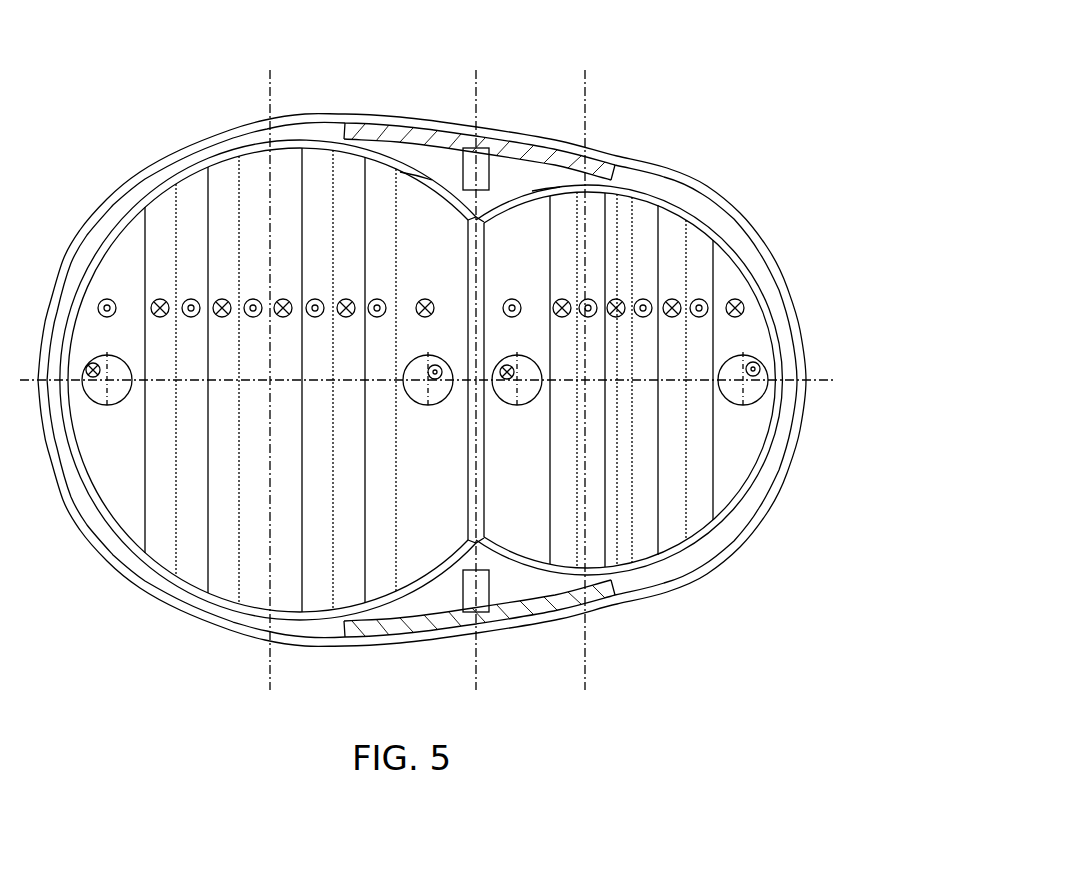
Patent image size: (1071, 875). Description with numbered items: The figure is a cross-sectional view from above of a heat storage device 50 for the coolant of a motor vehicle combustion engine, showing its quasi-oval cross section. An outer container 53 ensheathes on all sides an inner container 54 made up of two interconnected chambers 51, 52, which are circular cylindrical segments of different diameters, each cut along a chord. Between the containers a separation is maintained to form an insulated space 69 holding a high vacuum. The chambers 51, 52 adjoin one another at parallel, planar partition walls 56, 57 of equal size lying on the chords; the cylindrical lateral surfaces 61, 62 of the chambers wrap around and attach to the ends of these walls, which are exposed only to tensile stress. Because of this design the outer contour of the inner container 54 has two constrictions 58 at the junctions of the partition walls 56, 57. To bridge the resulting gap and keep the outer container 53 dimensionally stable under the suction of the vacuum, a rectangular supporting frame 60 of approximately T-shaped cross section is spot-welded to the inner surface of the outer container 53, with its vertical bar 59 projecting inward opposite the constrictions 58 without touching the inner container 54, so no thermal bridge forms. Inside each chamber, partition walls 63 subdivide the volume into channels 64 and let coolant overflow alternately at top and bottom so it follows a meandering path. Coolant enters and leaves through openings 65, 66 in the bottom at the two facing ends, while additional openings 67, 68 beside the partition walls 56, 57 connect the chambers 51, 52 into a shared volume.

The heat storage device 50 is at (770, 82).
The chamber 51 is at (717, 221).
The chamber 52 is at (128, 205).
The outer container 53 is at (181, 148).
The inner container 54 is at (432, 180).
The partition wall 56 is at (486, 468).
The partition wall 57 is at (466, 468).
The constriction 58 is at (484, 206).
The bar 59 is at (476, 380).
The supporting frame 60 is at (460, 133).
The cylindrical lateral surface 61 is at (748, 274).
The cylindrical lateral surface 62 is at (113, 240).
The partition wall 63 is at (395, 288).
The channel 64 is at (429, 462).
The opening 65 is at (740, 408).
The opening 66 is at (110, 405).
The opening 67 is at (433, 407).
The opening 68 is at (512, 408).
The insulated space 69 is at (243, 137).